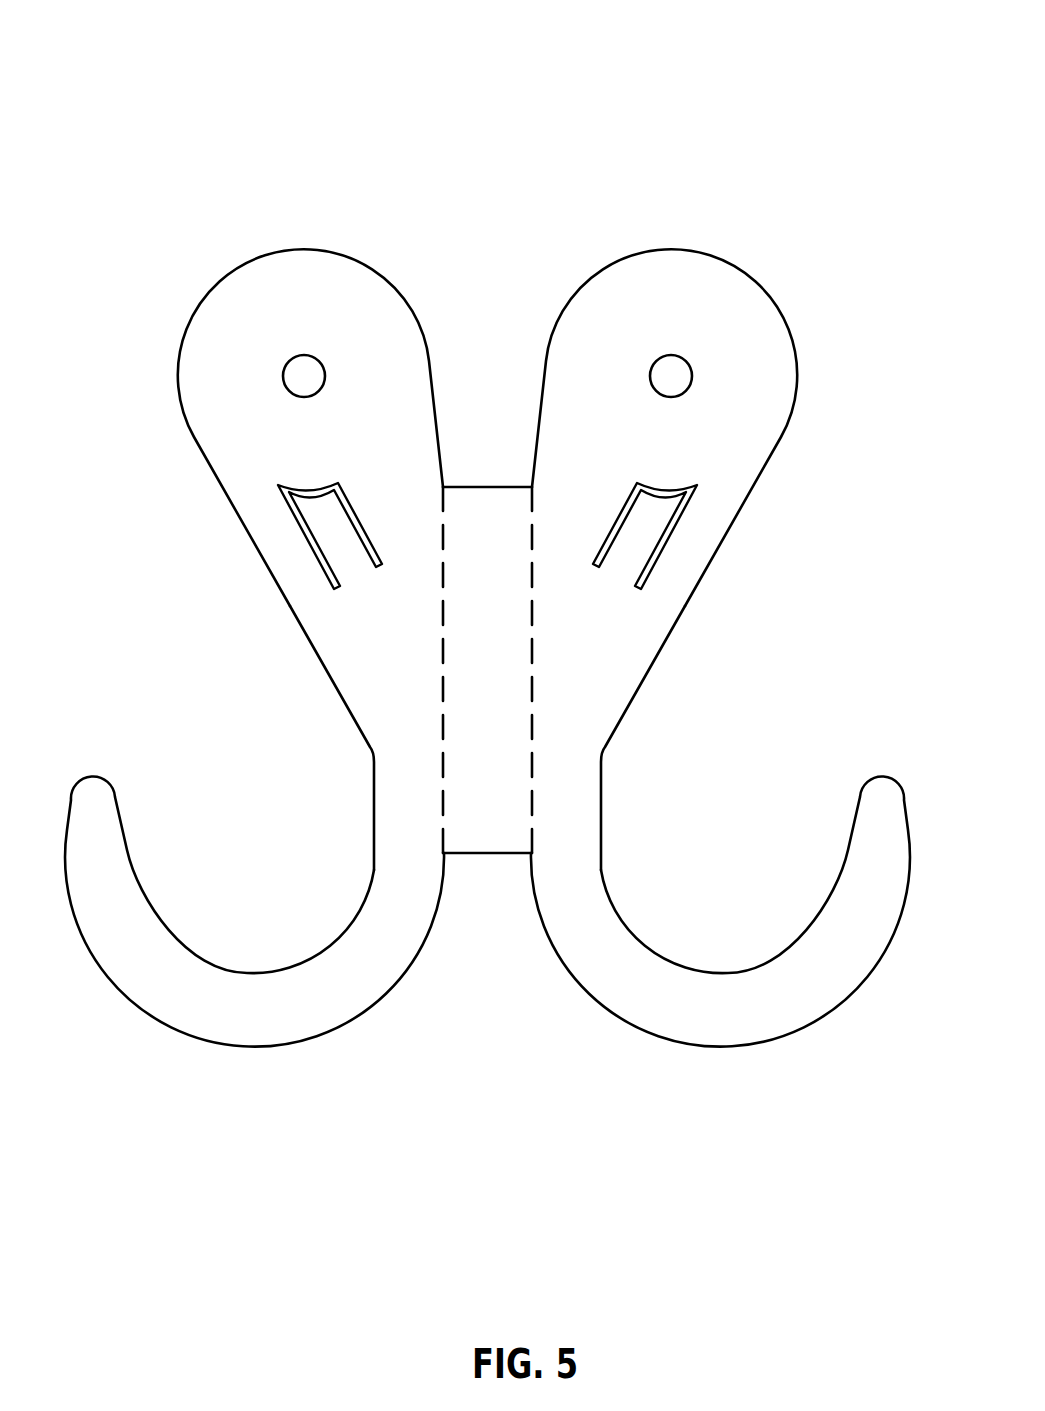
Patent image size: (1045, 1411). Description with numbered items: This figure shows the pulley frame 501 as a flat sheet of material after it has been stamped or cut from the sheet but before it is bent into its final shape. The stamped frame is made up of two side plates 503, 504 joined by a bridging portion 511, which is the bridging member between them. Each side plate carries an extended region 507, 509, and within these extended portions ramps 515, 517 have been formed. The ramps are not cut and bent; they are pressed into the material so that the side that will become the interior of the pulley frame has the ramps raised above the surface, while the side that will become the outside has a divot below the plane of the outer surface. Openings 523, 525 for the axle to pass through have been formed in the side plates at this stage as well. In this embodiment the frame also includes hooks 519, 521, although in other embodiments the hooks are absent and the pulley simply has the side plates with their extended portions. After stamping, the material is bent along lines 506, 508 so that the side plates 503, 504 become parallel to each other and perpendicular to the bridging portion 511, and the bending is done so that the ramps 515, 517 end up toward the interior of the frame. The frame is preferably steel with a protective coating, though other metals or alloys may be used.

The pulley frame 501 is at (500, 241).
The side plate 503 is at (708, 448).
The side plate 504 is at (242, 438).
The bend line 506 is at (428, 742).
The extended region 507 is at (383, 657).
The bend line 508 is at (547, 742).
The extended region 509 is at (623, 645).
The bridging portion 511 is at (483, 818).
The ramp 515 is at (655, 528).
The ramp 517 is at (318, 530).
The hook 519 is at (195, 1002).
The hook 521 is at (716, 1015).
The opening for the axle 523 is at (296, 370).
The opening for the axle 525 is at (678, 374).